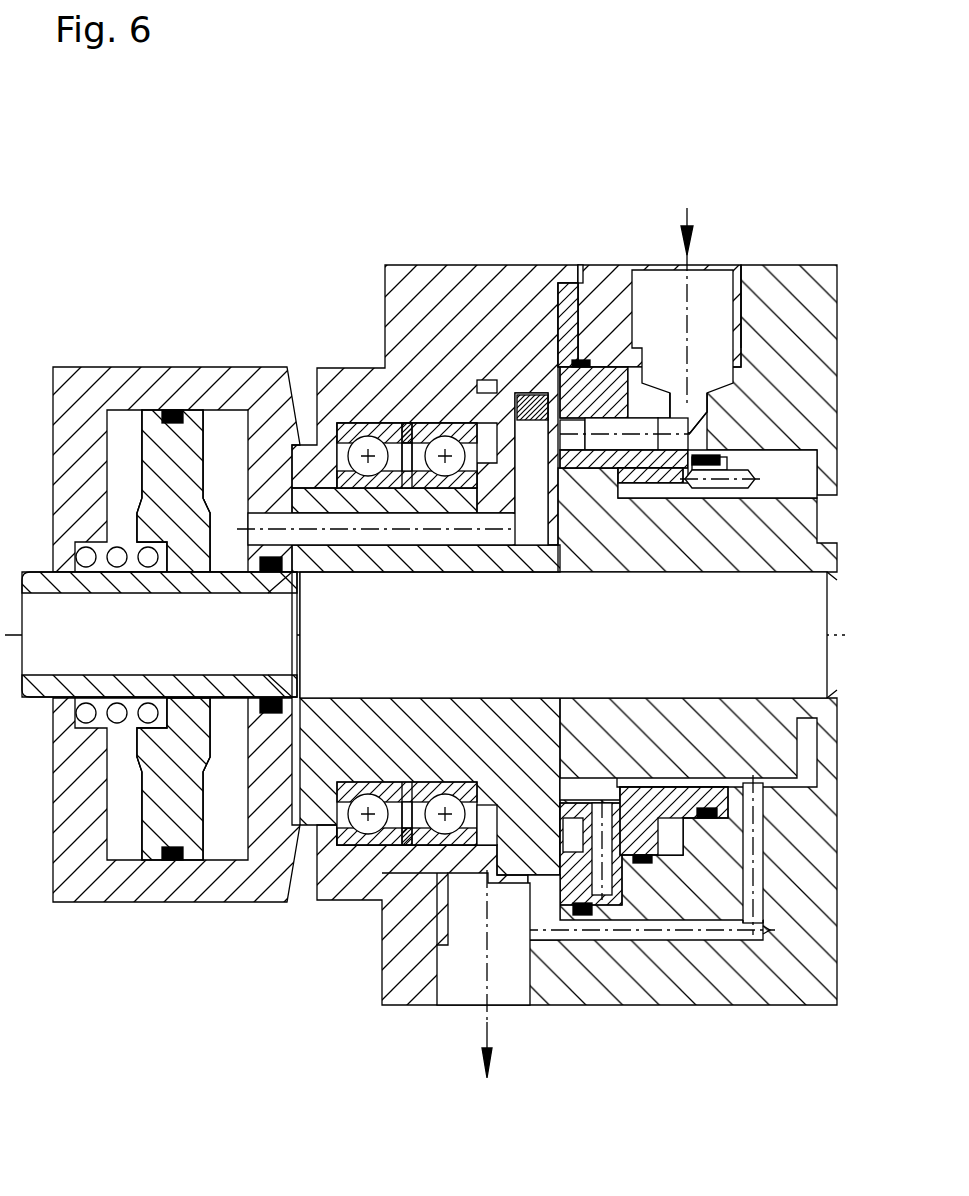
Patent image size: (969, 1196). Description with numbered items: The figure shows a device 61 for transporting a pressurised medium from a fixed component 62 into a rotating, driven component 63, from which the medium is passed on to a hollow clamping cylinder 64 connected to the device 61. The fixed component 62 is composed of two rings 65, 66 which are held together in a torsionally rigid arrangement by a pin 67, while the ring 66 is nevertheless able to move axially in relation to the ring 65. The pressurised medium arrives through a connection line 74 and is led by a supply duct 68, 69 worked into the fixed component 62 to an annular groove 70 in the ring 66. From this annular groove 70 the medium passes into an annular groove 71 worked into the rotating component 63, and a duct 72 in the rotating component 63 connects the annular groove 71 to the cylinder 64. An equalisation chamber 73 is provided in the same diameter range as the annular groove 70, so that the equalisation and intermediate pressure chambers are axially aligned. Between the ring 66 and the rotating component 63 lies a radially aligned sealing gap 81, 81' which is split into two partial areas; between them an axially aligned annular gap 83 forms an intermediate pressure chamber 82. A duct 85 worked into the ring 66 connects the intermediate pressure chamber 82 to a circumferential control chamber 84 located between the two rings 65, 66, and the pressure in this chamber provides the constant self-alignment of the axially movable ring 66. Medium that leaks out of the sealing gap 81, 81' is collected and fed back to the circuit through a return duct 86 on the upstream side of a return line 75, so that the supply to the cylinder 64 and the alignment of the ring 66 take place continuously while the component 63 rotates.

The device 61 is at (153, 1017).
The fixed component 62 is at (760, 263).
The rotating, driven component 63 is at (800, 465).
The cylinder 64 is at (136, 355).
The ring 65 is at (792, 285).
The ring 66 is at (598, 375).
The pin 67 is at (707, 470).
The supply duct 68 is at (700, 410).
The supply duct 69 is at (604, 447).
The annular groove 70 is at (580, 468).
The annular groove 71 is at (540, 437).
The duct 72 is at (360, 547).
The equalisation chamber 73 is at (660, 455).
The connection line 74 is at (660, 300).
The return line 75 is at (470, 990).
The sealing gap 81 is at (676, 722).
The sealing gap 81' is at (664, 715).
The intermediate pressure chamber 82 is at (588, 780).
The annular gap 83 is at (590, 803).
The control chamber 84 is at (700, 850).
The duct 85 is at (668, 838).
The return duct 86 is at (752, 800).